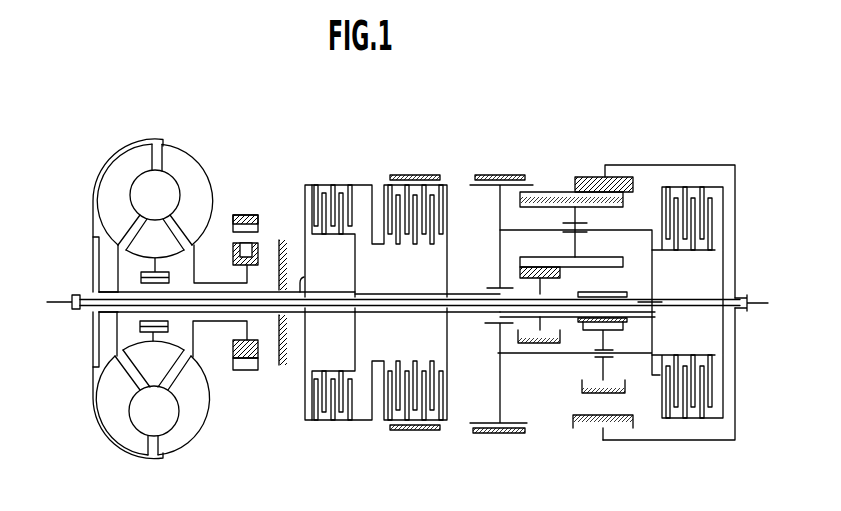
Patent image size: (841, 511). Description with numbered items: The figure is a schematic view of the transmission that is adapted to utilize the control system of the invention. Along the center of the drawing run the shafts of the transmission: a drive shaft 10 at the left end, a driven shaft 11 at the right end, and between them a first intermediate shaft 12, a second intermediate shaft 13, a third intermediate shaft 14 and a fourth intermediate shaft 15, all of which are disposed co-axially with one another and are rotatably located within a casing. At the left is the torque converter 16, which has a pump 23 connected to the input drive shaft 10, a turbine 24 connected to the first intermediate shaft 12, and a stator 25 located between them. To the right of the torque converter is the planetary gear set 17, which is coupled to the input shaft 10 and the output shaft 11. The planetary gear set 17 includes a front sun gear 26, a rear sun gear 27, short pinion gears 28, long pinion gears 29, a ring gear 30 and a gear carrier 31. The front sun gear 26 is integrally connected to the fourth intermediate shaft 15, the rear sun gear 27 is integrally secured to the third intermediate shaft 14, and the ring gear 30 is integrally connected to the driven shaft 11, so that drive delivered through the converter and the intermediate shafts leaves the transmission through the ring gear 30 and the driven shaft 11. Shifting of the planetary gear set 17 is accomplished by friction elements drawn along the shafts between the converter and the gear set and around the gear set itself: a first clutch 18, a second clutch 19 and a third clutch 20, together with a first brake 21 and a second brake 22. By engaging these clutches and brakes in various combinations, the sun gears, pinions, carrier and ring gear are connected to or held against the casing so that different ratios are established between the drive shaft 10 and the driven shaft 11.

The drive shaft 10 is at (63, 303).
The driven shaft 11 is at (757, 304).
The first intermediate shaft 12 is at (301, 283).
The second intermediate shaft 13 is at (331, 299).
The third intermediate shaft 14 is at (412, 298).
The fourth intermediate shaft 15 is at (482, 294).
The torque converter 16 is at (185, 139).
The planetary gear set 17 is at (589, 143).
The first clutch 18 is at (338, 184).
The second clutch 19 is at (427, 178).
The third clutch 20 is at (688, 191).
The first brake 21 is at (418, 185).
The second brake 22 is at (501, 175).
The pump 23 is at (198, 210).
The turbine 24 is at (126, 210).
The stator 25 is at (160, 250).
The front sun gear 26 is at (528, 344).
The rear sun gear 27 is at (624, 277).
The short pinion gears 28 is at (590, 392).
The long pinion gears 29 is at (547, 193).
The ring gear 30 is at (627, 192).
The gear carrier 31 is at (533, 231).